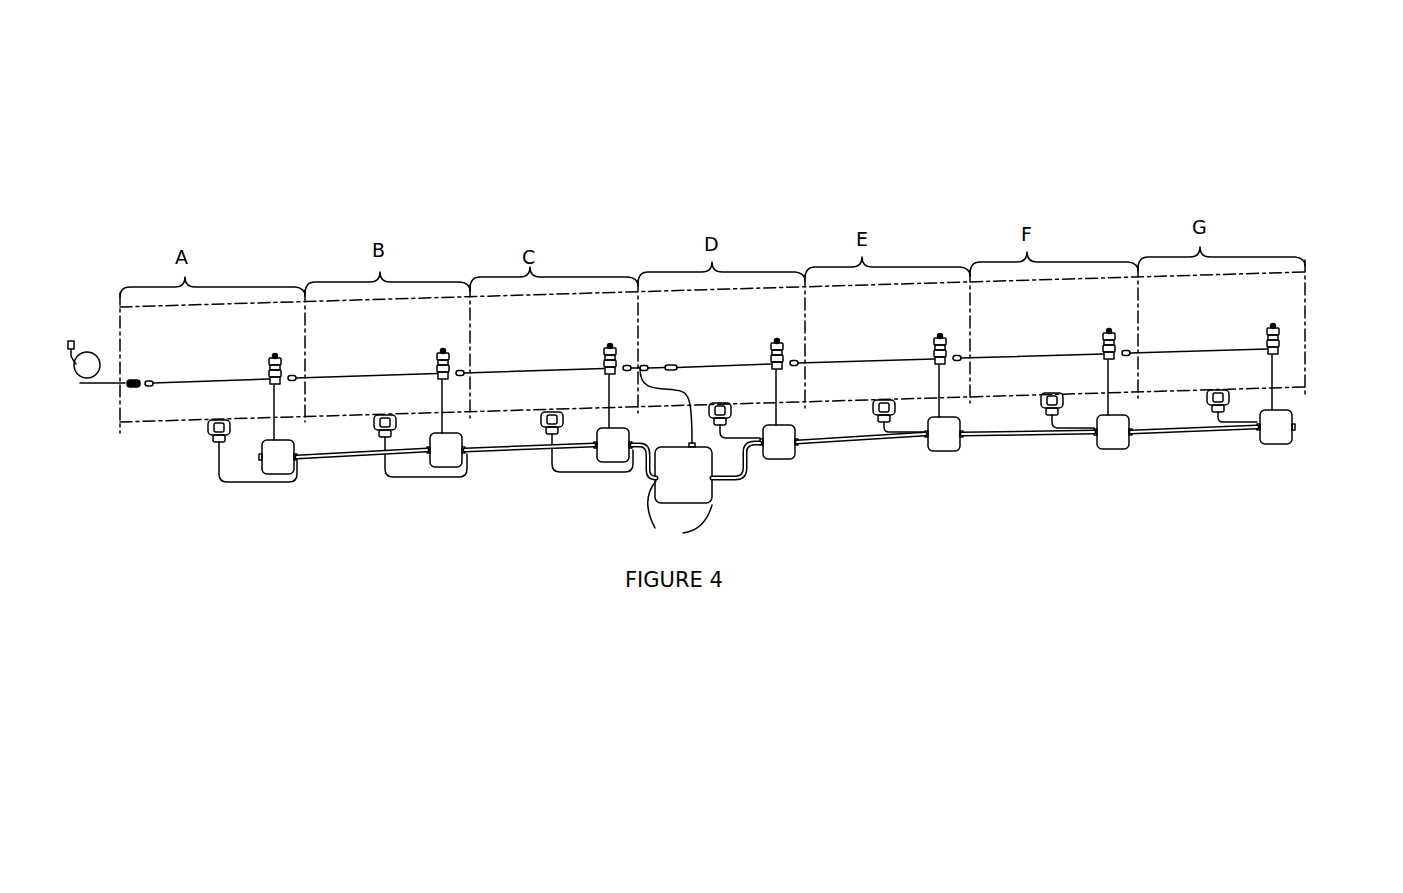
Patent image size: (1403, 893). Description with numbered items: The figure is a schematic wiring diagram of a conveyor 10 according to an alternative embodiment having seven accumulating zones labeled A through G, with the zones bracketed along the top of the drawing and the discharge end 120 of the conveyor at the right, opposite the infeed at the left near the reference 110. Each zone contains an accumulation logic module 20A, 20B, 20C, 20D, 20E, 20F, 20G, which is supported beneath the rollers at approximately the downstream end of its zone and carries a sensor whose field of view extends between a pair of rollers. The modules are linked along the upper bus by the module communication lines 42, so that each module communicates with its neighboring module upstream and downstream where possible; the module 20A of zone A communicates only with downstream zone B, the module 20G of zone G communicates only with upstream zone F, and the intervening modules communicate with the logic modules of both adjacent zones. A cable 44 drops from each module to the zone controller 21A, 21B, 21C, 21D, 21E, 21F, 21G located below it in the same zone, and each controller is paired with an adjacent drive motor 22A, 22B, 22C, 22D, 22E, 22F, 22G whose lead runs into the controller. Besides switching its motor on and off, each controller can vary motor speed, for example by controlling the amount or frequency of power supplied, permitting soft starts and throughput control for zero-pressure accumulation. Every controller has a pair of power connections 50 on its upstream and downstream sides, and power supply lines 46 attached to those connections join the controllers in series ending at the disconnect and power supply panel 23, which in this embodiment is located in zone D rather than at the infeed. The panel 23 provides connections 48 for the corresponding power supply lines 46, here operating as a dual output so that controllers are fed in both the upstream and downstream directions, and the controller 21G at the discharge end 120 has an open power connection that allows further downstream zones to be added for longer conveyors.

The conveyor 10 is at (796, 116).
The upstream (infeed) end 110 is at (103, 324).
The discharge end 120 is at (1333, 302).
The module communication lines 42 is at (173, 381).
The sensor cable 44 is at (274, 412).
The accumulation logic module 20A is at (269, 356).
The accumulation logic module 20B is at (441, 350).
The accumulation logic module 20C is at (609, 346).
The accumulation logic module 20D is at (775, 341).
The accumulation logic module 20E is at (939, 336).
The accumulation logic module 20F is at (1108, 331).
The accumulation logic module 20G is at (1272, 326).
The zone controller 21A is at (282, 470).
The zone controller 21B is at (447, 462).
The zone controller 21C is at (612, 456).
The zone controller 21D is at (780, 450).
The zone controller 21E is at (950, 446).
The zone controller 21F is at (1114, 444).
The zone controller 21G is at (1277, 434).
The drive motor 22A is at (204, 438).
The drive motor 22B is at (376, 455).
The drive motor 22C is at (541, 440).
The drive motor 22D is at (727, 480).
The drive motor 22E is at (884, 434).
The drive motor 22F is at (1049, 425).
The drive motor 22G is at (1212, 406).
The disconnect and power supply panel 23 is at (690, 482).
The power supply lines 46 is at (500, 461).
The connections 48 is at (647, 517).
The power connections 50 is at (420, 466).